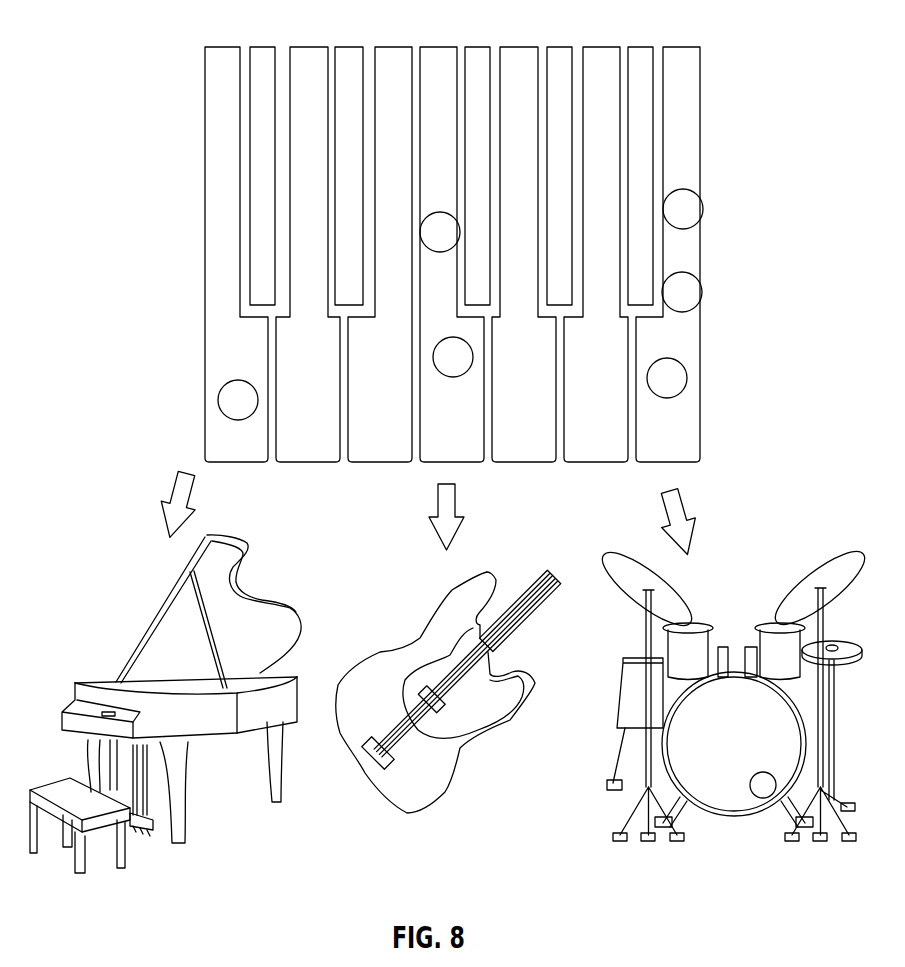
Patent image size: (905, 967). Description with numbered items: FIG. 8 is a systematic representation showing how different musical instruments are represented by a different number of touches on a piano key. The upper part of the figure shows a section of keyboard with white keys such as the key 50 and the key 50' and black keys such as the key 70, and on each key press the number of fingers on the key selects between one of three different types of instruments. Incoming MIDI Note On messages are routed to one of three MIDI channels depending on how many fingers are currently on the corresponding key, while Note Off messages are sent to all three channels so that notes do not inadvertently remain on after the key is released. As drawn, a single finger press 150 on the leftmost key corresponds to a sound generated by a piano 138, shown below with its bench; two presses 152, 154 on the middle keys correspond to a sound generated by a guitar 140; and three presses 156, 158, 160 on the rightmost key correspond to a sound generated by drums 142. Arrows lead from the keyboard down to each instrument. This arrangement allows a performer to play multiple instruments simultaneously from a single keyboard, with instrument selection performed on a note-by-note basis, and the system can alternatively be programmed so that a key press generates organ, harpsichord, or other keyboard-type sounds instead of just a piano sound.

The piano key 50 is at (205, 254).
The piano key 50' is at (608, 238).
The key 70 is at (263, 47).
The single finger press 150 is at (218, 400).
The press 152 is at (420, 232).
The press 154 is at (433, 357).
The press 156 is at (703, 209).
The press 158 is at (702, 292).
The press 160 is at (688, 378).
The piano 138 is at (102, 680).
The guitar 140 is at (402, 650).
The drums 142 is at (765, 622).